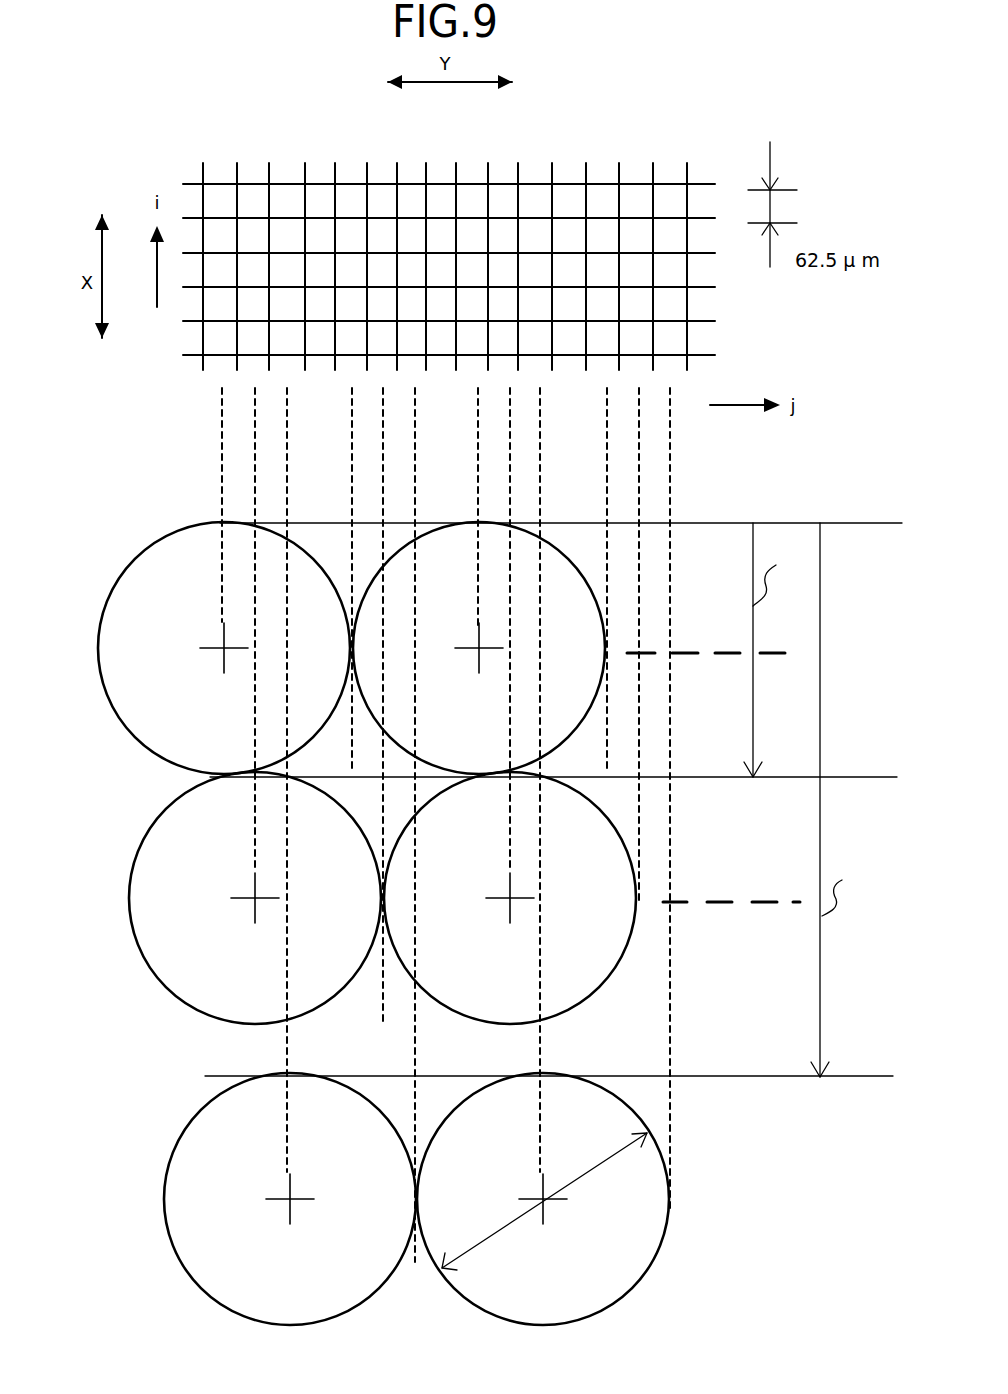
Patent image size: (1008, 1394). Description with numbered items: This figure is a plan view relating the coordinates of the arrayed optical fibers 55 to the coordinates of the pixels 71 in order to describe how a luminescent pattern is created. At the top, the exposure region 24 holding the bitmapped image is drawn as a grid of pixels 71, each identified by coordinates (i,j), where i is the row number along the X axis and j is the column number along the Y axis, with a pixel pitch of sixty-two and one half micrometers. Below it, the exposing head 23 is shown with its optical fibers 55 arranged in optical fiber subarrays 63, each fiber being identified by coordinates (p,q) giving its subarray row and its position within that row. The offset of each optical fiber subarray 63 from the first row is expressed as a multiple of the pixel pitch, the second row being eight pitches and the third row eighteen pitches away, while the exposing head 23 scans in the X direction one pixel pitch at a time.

The exposure region 24 is at (622, 123).
The pixel 71 is at (252, 195).
The exposing head 23 is at (748, 495).
The optical fiber 55 is at (195, 521).
The optical fiber subarray 63 is at (108, 577).